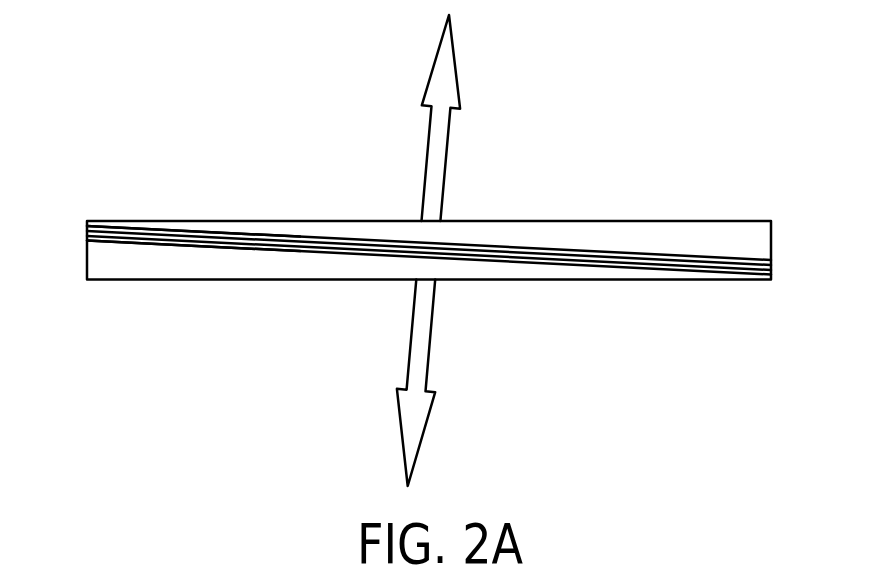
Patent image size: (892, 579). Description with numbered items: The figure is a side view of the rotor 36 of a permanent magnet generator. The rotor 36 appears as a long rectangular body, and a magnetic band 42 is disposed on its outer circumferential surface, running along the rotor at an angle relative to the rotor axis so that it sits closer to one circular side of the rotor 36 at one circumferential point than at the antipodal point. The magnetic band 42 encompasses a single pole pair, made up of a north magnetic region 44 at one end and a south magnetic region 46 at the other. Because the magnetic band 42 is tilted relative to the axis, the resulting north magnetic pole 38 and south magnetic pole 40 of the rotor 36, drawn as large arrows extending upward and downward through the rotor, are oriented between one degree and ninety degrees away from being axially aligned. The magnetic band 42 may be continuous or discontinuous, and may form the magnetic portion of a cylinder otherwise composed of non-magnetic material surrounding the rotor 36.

The rotor 36 is at (707, 220).
The north magnetic pole 38 is at (456, 87).
The south magnetic pole 40 is at (420, 440).
The magnetic band 42 is at (775, 262).
The north magnetic region 44 is at (105, 225).
The south magnetic region 46 is at (88, 243).